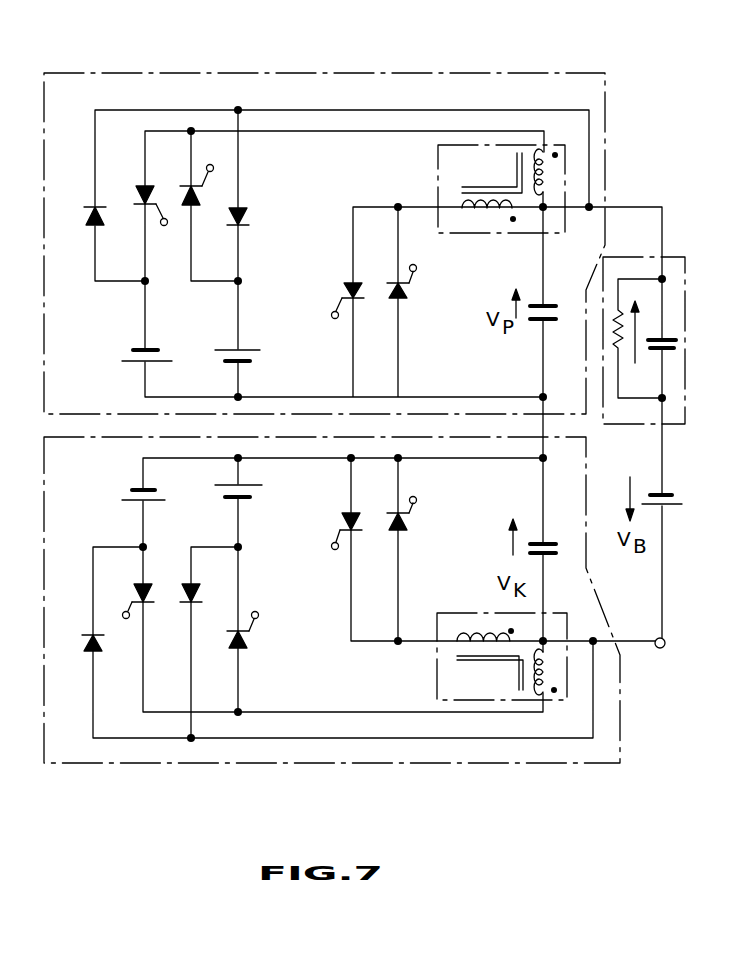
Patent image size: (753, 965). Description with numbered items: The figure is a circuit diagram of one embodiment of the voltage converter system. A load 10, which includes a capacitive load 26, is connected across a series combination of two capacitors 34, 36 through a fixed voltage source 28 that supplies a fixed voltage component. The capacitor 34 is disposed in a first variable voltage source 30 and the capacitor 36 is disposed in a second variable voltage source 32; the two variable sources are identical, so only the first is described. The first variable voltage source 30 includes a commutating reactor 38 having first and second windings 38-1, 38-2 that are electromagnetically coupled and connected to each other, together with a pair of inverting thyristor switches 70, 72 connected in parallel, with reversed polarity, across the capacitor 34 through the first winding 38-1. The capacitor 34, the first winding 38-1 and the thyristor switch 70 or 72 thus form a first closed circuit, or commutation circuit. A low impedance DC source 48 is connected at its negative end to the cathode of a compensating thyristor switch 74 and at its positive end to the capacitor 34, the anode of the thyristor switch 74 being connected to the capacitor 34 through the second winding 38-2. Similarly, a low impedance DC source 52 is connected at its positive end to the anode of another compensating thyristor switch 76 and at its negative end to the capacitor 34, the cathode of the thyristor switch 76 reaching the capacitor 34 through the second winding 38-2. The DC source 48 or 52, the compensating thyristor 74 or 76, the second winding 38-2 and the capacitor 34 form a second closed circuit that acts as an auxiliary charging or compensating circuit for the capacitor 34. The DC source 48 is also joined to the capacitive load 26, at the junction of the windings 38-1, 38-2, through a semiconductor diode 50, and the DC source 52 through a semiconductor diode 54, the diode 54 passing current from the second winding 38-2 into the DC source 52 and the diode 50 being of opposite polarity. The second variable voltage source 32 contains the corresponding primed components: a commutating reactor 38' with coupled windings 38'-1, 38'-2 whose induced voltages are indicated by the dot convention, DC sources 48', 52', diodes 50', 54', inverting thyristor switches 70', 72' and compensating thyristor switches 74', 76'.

The load 10 is at (641, 266).
The capacitive load 26 is at (677, 349).
The fixed voltage source 28 is at (683, 504).
The first variable voltage source 30 is at (205, 72).
The second variable voltage source 32 is at (318, 764).
The capacitor 34 is at (556, 321).
The capacitor 36 is at (552, 534).
The commutating reactor 38 is at (470, 206).
The first winding 38-1 is at (482, 223).
The second winding 38-2 is at (535, 182).
The low impedance DC source 48 is at (128, 343).
The semiconductor diode 50 is at (78, 194).
The low impedance DC source 52 is at (220, 342).
The semiconductor diode 54 is at (255, 201).
The inverting thyristor switch 70 is at (333, 290).
The inverting thyristor switch 72 is at (413, 298).
The compensating thyristor switch 74 is at (135, 183).
The compensating thyristor switch 76 is at (201, 214).
The commutating reactor 38' is at (476, 641).
The first winding 38'-1 is at (471, 612).
The second winding 38'-2 is at (503, 673).
The low impedance DC source 48' is at (267, 483).
The semiconductor diode 50' is at (205, 579).
The low impedance DC source 52' is at (121, 480).
The semiconductor diode 54' is at (76, 629).
The inverting thyristor switch 70' is at (328, 530).
The inverting thyristor switch 72' is at (431, 516).
The compensating thyristor switch 74' is at (151, 612).
The compensating thyristor switch 76' is at (263, 630).